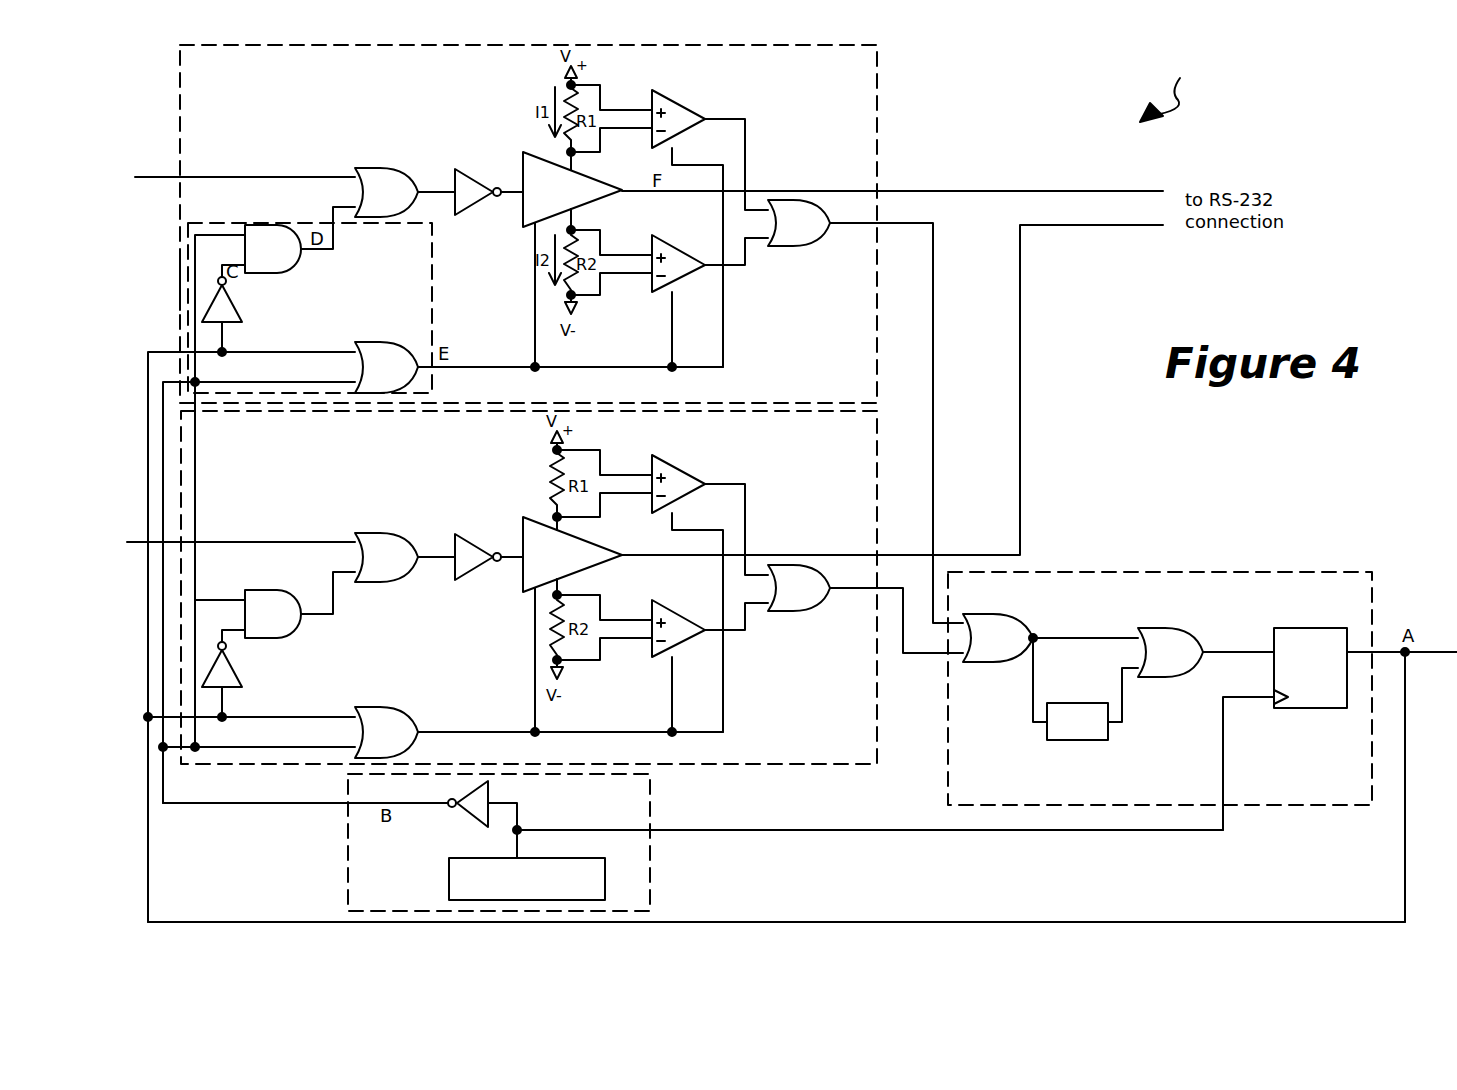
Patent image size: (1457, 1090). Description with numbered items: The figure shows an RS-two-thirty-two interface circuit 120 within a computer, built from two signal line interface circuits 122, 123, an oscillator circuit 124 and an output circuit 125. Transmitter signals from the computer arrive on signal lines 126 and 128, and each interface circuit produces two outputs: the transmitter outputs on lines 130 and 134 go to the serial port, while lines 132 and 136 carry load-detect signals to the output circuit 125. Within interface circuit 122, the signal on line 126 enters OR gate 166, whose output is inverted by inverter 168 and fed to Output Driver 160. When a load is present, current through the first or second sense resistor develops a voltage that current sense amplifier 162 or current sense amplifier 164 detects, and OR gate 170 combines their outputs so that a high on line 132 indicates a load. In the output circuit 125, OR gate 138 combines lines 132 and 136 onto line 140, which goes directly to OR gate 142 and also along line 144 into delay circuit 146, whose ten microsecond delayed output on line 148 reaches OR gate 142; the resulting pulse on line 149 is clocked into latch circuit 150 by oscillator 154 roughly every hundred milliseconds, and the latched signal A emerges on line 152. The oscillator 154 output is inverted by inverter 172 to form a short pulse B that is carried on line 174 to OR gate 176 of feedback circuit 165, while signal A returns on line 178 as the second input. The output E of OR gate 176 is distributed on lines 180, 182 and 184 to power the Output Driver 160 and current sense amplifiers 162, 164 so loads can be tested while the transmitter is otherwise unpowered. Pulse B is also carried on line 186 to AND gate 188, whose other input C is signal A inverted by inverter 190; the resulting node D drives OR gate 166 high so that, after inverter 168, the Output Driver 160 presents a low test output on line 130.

The RS-232 interface circuit 120 is at (1177, 89).
The signal line interface circuit 122 is at (877, 93).
The signal line interface circuit 123 is at (878, 433).
The oscillator circuit 124 is at (650, 803).
The output circuit 125 is at (1372, 603).
The signal line 126 is at (162, 180).
The signal line 128 is at (143, 545).
The line 130 is at (1022, 190).
The line 132 is at (933, 262).
The line 134 is at (893, 555).
The line 136 is at (903, 600).
The OR gate 138 is at (993, 620).
The line 140 is at (1052, 638).
The OR gate 142 is at (1160, 630).
The delay input line 144 is at (1033, 712).
The delay circuit 146 is at (1108, 738).
The line 148 is at (1122, 675).
The line 149 is at (1240, 655).
The latch circuit 150 is at (1300, 628).
The flip-flop output line 152 is at (1420, 652).
The oscillator 154 is at (605, 886).
The Output Driver 160 is at (585, 178).
The current sense amplifier 162 is at (672, 100).
The current sense amplifier 164 is at (652, 245).
The feedback circuit 165 is at (432, 305).
The OR gate 166 is at (368, 168).
The inverter 168 is at (470, 180).
The OR gate 170 is at (795, 250).
The inverter 172 is at (490, 796).
The line 174 is at (163, 518).
The OR gate 176 is at (372, 346).
The line 178 is at (148, 448).
The line 180 is at (535, 345).
The line 182 is at (723, 345).
The line 184 is at (672, 355).
The line 186 is at (180, 283).
The AND gate 188 is at (287, 273).
The inverter 190 is at (240, 312).